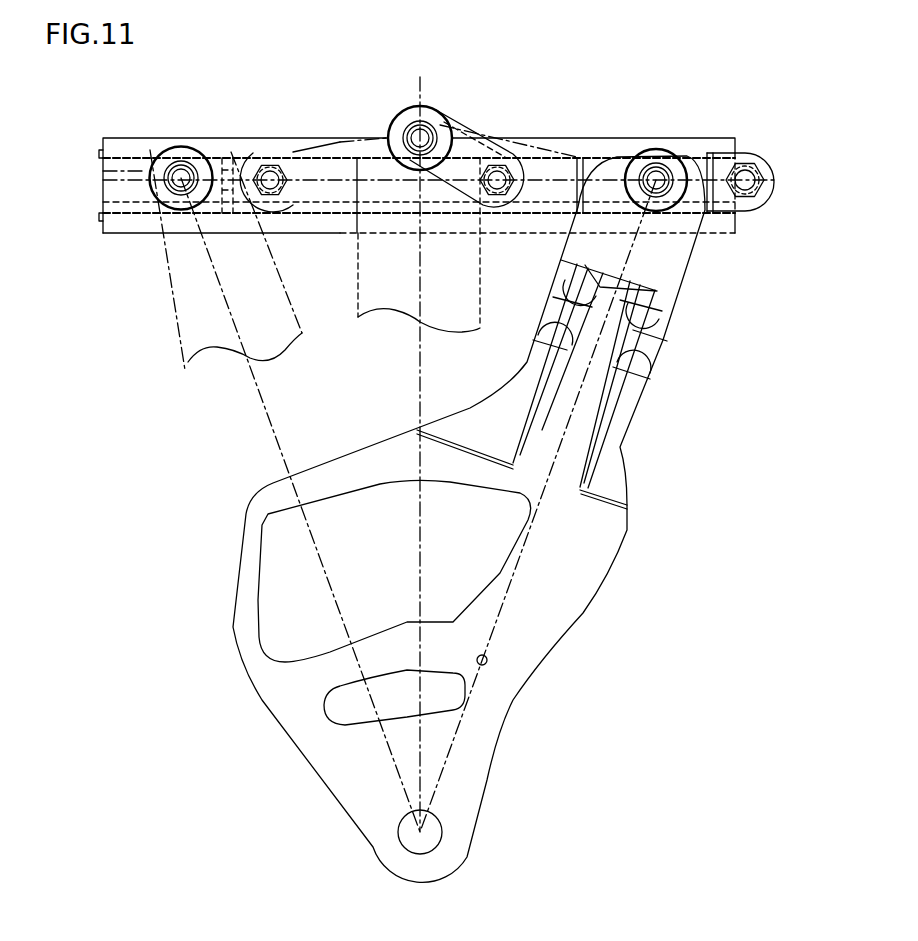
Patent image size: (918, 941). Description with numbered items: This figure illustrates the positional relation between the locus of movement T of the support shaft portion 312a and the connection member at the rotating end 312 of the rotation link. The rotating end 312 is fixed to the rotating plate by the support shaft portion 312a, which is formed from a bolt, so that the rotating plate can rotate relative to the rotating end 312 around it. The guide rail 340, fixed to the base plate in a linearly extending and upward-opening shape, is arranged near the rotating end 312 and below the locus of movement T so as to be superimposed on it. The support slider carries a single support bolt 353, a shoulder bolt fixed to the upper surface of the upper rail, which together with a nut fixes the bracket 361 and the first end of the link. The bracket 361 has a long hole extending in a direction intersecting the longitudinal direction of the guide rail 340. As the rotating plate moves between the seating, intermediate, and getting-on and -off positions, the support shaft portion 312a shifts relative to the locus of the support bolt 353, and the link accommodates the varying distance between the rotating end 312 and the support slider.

The rotating end 312 is at (153, 152).
The support shaft portion 312a is at (177, 140).
The bracket 361 is at (226, 150).
The locus of movement T is at (297, 150).
The guide rail 340 is at (578, 147).
The support bolt 353 is at (742, 170).